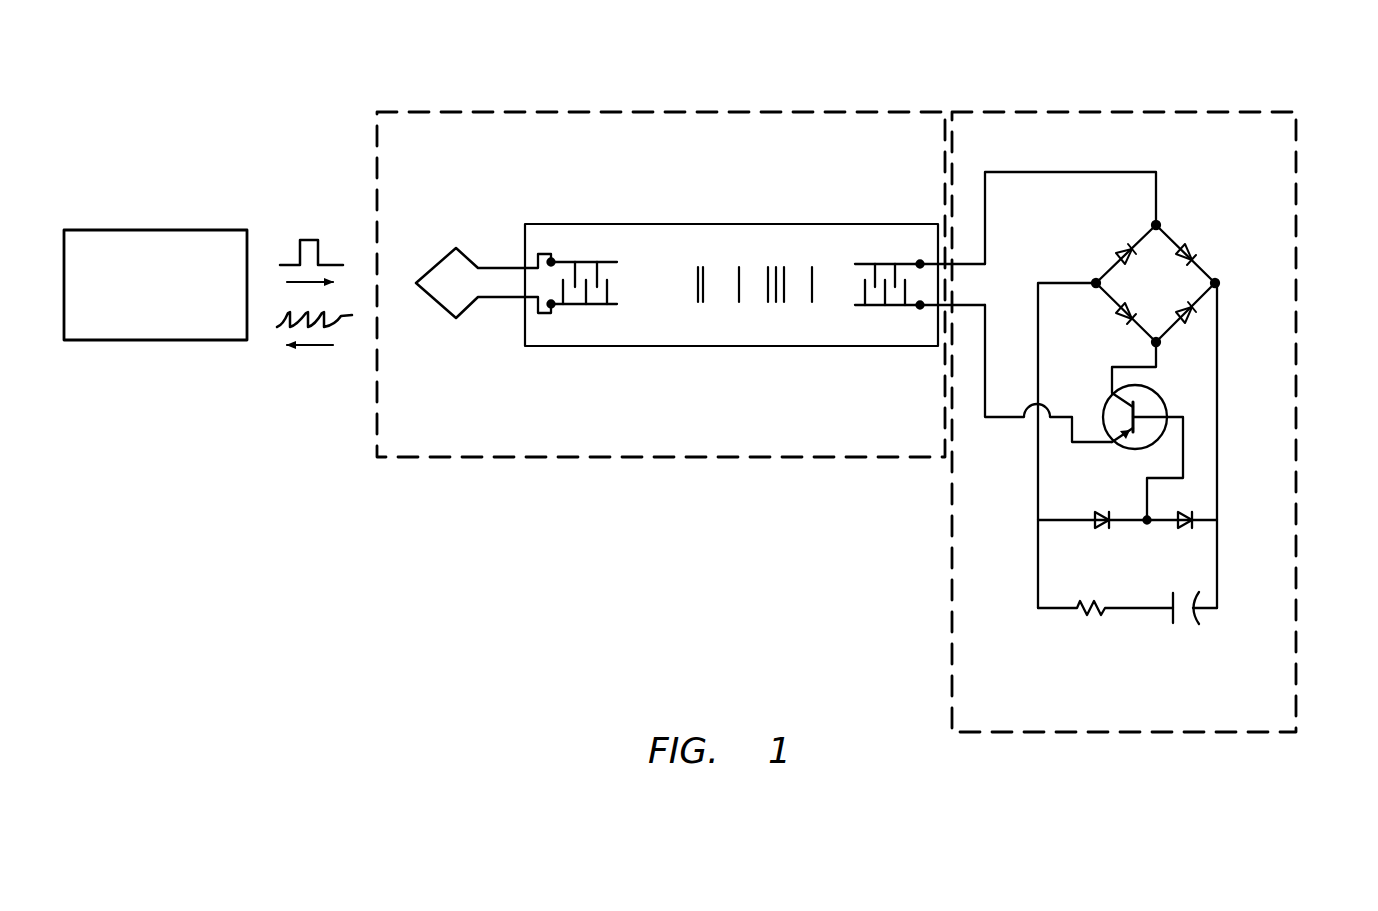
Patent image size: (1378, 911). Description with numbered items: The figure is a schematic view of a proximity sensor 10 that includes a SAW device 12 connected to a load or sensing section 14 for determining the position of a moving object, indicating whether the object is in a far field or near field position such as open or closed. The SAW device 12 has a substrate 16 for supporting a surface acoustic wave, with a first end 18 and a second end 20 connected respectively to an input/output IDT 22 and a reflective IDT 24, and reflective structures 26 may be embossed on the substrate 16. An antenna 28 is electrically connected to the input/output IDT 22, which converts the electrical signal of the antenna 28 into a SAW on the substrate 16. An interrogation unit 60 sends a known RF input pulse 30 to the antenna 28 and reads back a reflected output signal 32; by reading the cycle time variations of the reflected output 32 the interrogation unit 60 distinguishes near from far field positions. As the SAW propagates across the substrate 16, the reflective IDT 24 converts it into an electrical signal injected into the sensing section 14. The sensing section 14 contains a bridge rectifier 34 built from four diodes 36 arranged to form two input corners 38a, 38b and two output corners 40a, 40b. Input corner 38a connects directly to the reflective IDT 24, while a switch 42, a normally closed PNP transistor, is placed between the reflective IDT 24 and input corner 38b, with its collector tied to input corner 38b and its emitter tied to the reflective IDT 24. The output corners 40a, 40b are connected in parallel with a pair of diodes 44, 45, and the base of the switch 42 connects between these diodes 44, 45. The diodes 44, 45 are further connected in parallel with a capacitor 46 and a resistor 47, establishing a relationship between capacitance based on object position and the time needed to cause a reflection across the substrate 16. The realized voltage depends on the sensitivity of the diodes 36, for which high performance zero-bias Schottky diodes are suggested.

The proximity sensor 10 is at (838, 92).
The SAW device 12 is at (427, 460).
The sensing section 14 is at (1248, 112).
The substrate 16 is at (800, 240).
The first end 18 is at (543, 332).
The second end 20 is at (879, 333).
The input/output IDT 22 is at (582, 260).
The reflective IDT 24 is at (884, 262).
The reflective structures 26 is at (710, 282).
The antenna 28 is at (428, 268).
The RF pulse 30 is at (322, 250).
The output signal 32 is at (283, 327).
The bridge rectifier 34 is at (1200, 321).
The diodes 36 is at (1120, 250).
The input corner 38a is at (1160, 228).
The input corner 38b is at (1160, 345).
The output corner 40a is at (1094, 282).
The output corner 40b is at (1220, 283).
The switch 42 is at (1130, 446).
The diode 44 is at (1110, 526).
The diode 45 is at (1193, 526).
The capacitor 46 is at (1168, 616).
The resistor 47 is at (1083, 616).
The interrogation unit 60 is at (203, 323).